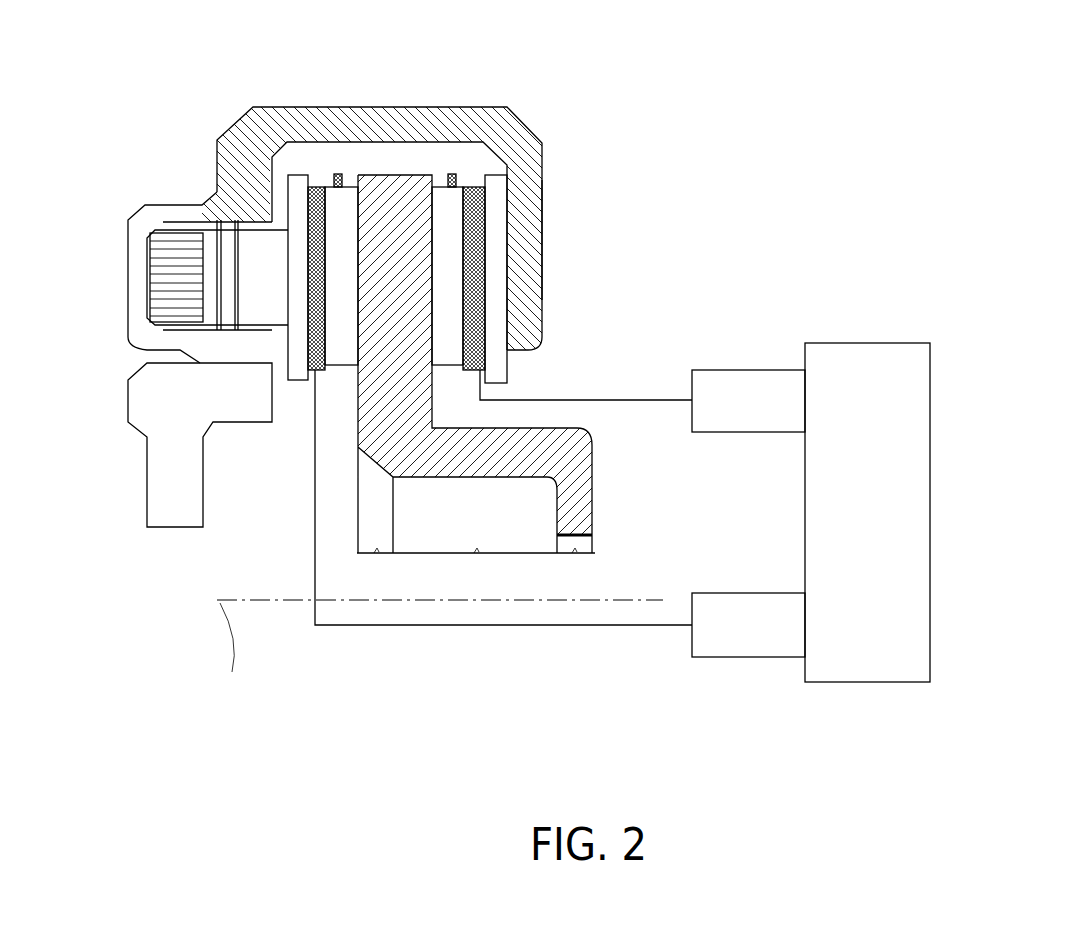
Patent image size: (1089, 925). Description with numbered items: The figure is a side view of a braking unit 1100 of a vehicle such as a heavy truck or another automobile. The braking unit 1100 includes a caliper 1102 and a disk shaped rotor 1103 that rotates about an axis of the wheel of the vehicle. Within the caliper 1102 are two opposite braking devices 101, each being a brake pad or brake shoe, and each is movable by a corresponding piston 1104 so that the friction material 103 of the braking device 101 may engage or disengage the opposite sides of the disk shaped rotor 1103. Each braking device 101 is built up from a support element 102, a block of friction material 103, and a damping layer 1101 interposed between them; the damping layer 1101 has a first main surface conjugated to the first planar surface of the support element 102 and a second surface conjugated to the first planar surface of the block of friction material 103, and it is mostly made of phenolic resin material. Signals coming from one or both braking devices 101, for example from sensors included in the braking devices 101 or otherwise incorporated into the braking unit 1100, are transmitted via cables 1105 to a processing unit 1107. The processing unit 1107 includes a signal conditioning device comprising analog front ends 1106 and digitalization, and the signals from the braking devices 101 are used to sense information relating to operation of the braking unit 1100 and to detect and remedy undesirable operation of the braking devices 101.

The braking device 101 is at (318, 187).
The support element 102 is at (272, 118).
The friction material 103 is at (445, 188).
The damping layer 1101 is at (330, 188).
The caliper 1102 is at (545, 172).
The disk shaped rotor 1103 is at (407, 270).
The piston 1104 is at (200, 200).
The cables 1105 is at (633, 407).
The analog front ends 1106 is at (738, 420).
The processing unit 1107 is at (905, 628).
The braking unit 1100 is at (145, 648).